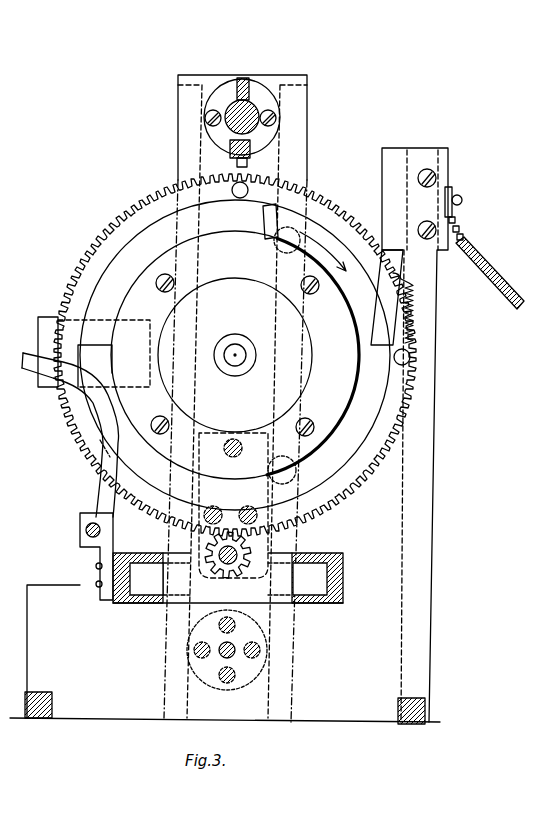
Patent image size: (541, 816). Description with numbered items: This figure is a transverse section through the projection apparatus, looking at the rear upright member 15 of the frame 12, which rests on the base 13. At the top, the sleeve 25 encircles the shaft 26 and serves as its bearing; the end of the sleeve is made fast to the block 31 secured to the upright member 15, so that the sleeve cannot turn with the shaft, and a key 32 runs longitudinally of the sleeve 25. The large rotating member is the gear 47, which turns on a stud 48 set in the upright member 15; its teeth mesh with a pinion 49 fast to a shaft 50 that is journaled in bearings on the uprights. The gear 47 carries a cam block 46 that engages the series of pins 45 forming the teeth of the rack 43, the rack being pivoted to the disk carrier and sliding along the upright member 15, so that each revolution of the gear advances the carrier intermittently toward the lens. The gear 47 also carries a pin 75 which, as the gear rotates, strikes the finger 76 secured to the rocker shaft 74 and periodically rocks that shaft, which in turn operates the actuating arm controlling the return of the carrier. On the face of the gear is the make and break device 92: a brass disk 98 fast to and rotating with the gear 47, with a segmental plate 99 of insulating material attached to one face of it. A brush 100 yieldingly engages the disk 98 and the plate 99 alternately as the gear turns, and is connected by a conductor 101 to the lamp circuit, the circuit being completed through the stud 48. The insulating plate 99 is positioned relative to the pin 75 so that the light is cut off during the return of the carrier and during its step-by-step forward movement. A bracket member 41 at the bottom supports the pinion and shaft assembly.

The frame 12 is at (428, 711).
The base 13 is at (42, 718).
The upright member 15 is at (293, 132).
The sleeve 25 is at (286, 100).
The shaft 26 is at (238, 110).
The block 31 is at (262, 93).
The key 32 is at (248, 80).
The bracket bar 41 is at (153, 603).
The rack 43 is at (230, 158).
The pins 45 is at (248, 163).
The cam block 46 is at (45, 333).
The gear 47 is at (398, 441).
The stud 48 is at (238, 352).
The pinion 49 is at (250, 552).
The shaft 50 is at (232, 560).
The rocker shaft 74 is at (87, 538).
The pin 75 is at (410, 360).
The finger 76 is at (108, 462).
The make and break device 92 is at (112, 267).
The brass disk 98 is at (330, 472).
The segmental plate 99 is at (243, 270).
The brush 100 is at (397, 283).
The conductor 101 is at (490, 279).